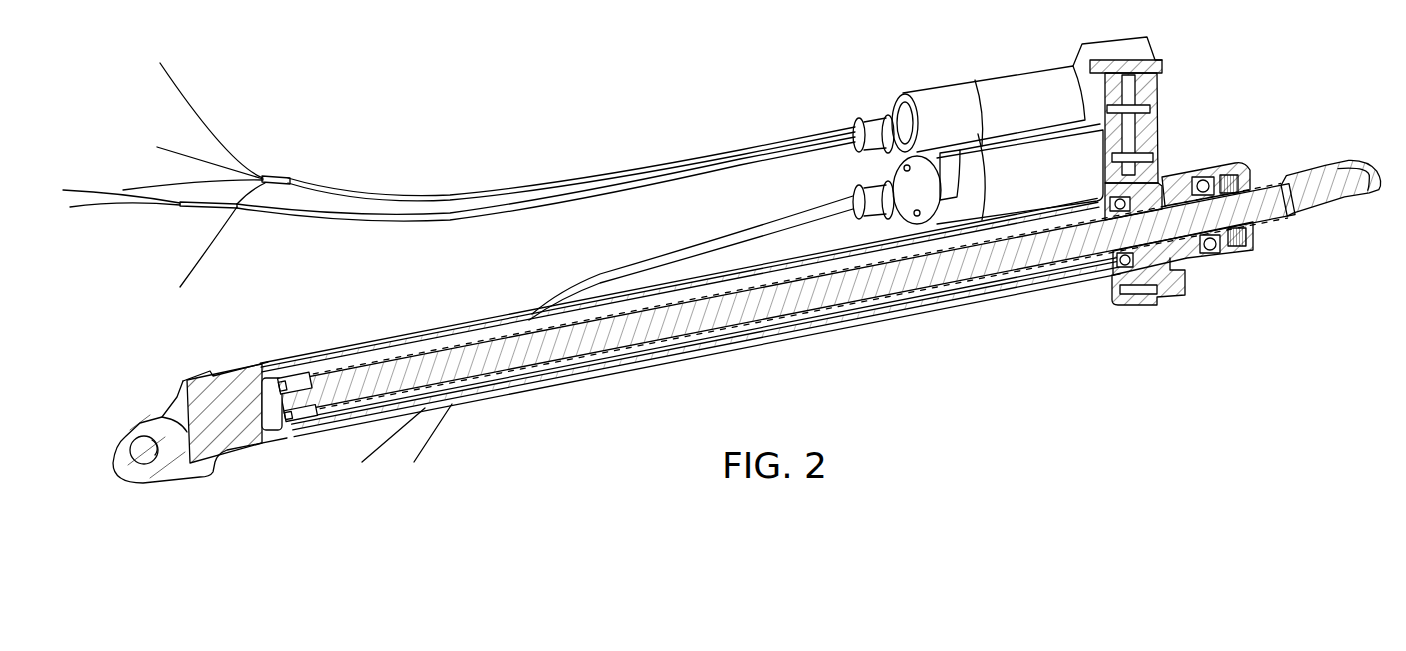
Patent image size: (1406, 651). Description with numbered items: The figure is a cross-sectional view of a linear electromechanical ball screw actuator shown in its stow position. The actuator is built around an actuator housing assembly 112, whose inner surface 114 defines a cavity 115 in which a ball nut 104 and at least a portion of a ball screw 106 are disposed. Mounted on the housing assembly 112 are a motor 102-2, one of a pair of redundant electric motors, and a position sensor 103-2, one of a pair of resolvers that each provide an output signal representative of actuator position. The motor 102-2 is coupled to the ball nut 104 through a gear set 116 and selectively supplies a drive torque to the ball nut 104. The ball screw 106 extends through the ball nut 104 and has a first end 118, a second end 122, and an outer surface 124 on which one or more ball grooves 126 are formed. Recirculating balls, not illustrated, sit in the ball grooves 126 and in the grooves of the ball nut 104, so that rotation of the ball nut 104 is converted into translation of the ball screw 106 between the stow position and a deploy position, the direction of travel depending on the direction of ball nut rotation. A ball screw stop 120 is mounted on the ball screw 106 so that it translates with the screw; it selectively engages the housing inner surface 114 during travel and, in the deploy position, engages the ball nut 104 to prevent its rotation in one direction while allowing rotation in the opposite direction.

The motor 102-2 is at (962, 147).
The position sensor 103-2 is at (1028, 73).
The ball nut 104 is at (1185, 195).
The ball screw 106 is at (610, 337).
The actuator housing assembly 112 is at (808, 337).
The inner surface 114 is at (455, 350).
The cavity 115 is at (490, 338).
The gear set 116 is at (1147, 133).
The first end 118 is at (282, 400).
The ball screw stop 120 is at (300, 427).
The second end 122 is at (1273, 193).
The outer surface 124 is at (535, 368).
The ball grooves 126 is at (477, 378).